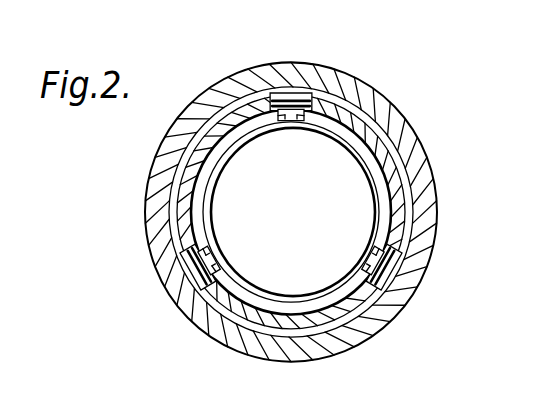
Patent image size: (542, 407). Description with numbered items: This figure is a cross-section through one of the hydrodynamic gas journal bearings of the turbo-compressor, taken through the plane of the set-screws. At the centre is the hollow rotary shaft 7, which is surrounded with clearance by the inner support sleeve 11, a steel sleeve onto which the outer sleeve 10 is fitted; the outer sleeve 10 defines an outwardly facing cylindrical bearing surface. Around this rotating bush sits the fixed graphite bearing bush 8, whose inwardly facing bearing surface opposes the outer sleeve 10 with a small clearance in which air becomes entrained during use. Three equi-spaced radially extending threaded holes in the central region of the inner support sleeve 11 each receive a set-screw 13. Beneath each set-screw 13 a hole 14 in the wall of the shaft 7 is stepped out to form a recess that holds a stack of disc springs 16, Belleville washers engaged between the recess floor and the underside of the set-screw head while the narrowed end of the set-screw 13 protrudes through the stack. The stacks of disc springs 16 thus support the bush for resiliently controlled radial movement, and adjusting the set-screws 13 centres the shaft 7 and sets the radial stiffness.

The hollow rotary shaft 7 is at (347, 125).
The fixed graphite bearing bush 8 is at (425, 247).
The outer sleeve 10 is at (170, 157).
The inner support sleeve 11 is at (208, 137).
The set-screw 13 is at (296, 98).
The hole 14 is at (293, 122).
The stack of disc springs 16 is at (203, 252).